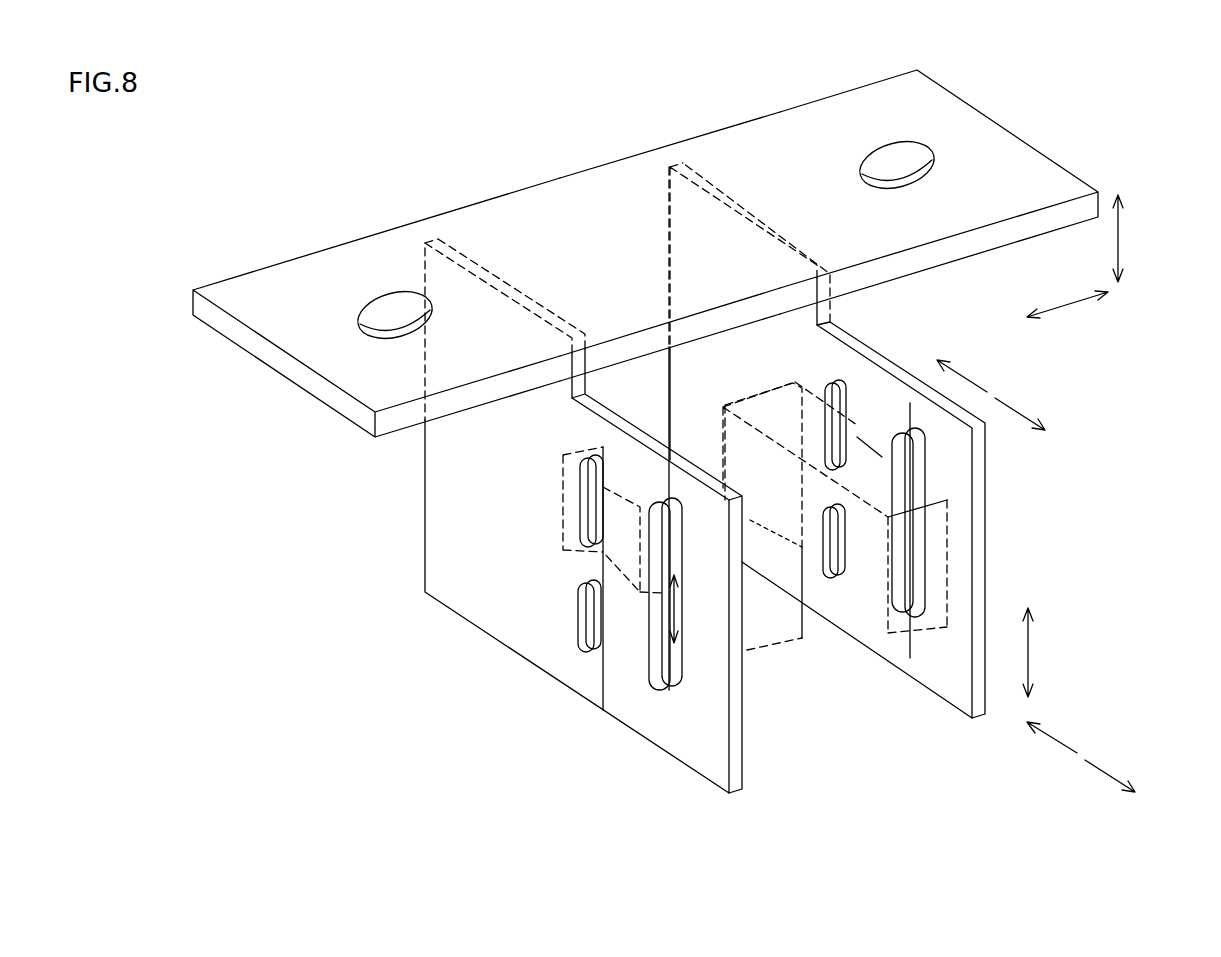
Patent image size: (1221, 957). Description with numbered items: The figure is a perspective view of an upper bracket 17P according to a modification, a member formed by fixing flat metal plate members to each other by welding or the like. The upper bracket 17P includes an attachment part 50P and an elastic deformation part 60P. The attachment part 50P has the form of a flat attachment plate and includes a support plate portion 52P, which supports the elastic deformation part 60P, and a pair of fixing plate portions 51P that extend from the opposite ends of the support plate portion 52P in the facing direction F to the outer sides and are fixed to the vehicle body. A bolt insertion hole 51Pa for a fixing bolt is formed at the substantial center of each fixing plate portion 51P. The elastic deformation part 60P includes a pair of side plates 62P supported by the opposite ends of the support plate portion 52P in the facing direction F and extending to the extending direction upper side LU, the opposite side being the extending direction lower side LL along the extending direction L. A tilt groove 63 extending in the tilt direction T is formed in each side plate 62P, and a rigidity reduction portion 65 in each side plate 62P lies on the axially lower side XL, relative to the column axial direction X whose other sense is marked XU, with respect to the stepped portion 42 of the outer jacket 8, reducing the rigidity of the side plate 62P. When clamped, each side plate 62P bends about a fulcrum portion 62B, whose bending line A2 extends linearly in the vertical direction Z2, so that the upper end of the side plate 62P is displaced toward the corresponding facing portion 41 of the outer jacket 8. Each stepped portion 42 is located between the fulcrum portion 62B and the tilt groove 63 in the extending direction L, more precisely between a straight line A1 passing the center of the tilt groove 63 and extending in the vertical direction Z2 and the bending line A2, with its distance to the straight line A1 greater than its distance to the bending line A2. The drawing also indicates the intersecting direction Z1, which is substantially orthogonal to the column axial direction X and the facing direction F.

The upper bracket 17P is at (645, 227).
The attachment part 50P is at (645, 251).
The fixing plate portion 51P is at (278, 280).
The bolt insertion hole 51Pa is at (395, 312).
The support plate portion 52P is at (525, 205).
The elastic deformation part 60P is at (734, 478).
The side plate 62P is at (594, 413).
The fulcrum portion 62B is at (600, 552).
The stepped portion 42 is at (640, 507).
The facing portion 41 is at (765, 630).
The rigidity reduction portion 65 is at (582, 505).
The tilt groove 63 is at (667, 668).
The outer jacket 8 is at (789, 657).
The straight line A1 is at (665, 690).
The bending line A2 is at (603, 655).
The tilt direction T is at (680, 620).
The facing direction F is at (1072, 306).
The intersecting direction Z1 is at (1032, 652).
The vertical direction Z2 is at (1122, 245).
The extending direction lower side LL is at (965, 372).
The extending direction upper side LU is at (1010, 402).
The extending direction L is at (1086, 335).
The axially lower side XL is at (1058, 735).
The X upper side XU is at (1100, 762).
The column axial direction X is at (1178, 696).